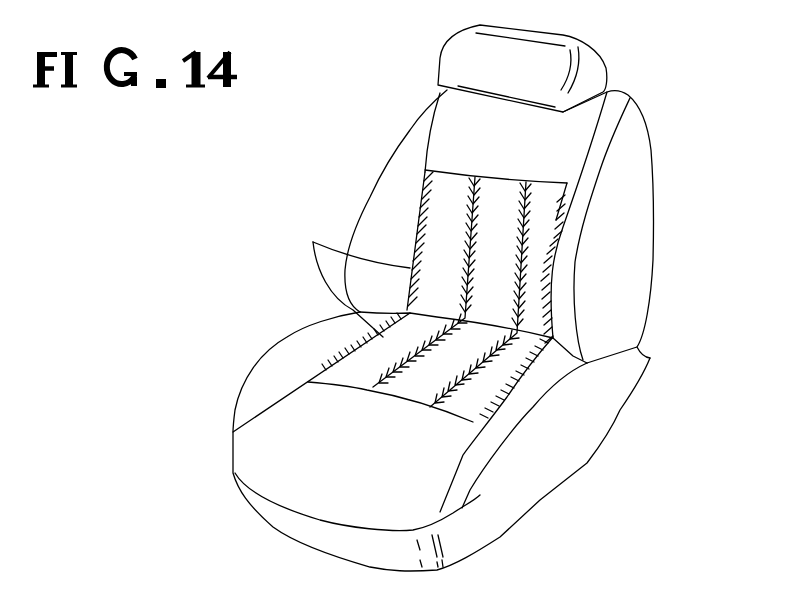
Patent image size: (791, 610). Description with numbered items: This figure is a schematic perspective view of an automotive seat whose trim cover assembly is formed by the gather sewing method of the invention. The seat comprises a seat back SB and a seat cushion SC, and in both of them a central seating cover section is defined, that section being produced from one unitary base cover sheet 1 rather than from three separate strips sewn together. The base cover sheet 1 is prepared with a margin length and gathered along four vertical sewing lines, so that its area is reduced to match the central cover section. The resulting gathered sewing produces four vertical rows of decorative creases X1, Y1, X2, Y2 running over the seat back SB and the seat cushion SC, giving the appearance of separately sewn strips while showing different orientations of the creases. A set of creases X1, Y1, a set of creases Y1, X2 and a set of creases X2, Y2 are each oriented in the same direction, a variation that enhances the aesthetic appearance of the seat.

The base cover sheet 1 is at (435, 186).
The decorative crease X1 is at (553, 257).
The decorative crease X2 is at (466, 228).
The decorative crease Y1 is at (527, 231).
The decorative crease Y2 is at (326, 222).
The seat back SB is at (655, 205).
The seat cushion SC is at (587, 459).